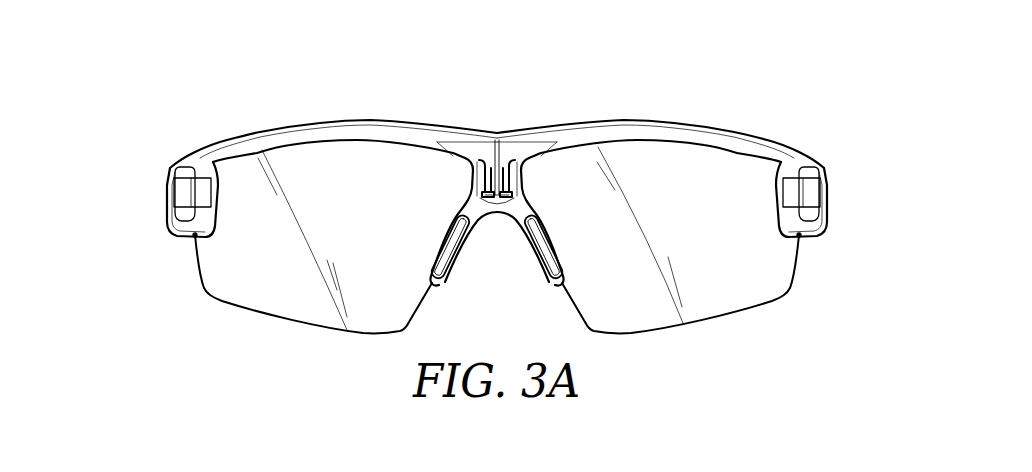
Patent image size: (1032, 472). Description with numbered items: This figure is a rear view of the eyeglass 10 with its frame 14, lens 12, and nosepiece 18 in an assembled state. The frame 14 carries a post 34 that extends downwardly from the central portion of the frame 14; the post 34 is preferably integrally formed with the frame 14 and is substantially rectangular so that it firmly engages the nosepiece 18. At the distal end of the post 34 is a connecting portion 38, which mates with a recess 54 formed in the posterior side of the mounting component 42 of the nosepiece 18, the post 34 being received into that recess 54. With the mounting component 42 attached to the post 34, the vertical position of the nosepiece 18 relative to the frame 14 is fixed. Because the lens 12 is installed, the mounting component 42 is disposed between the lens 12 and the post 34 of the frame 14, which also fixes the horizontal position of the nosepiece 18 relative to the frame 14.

The eyeglass 10 is at (941, 98).
The lens 12 is at (762, 292).
The frame 14 is at (649, 122).
The nosepiece 18 is at (477, 221).
The post 34 is at (494, 183).
The connecting portion 38 is at (498, 178).
The mounting component 42 is at (463, 175).
The recess 54 is at (520, 179).